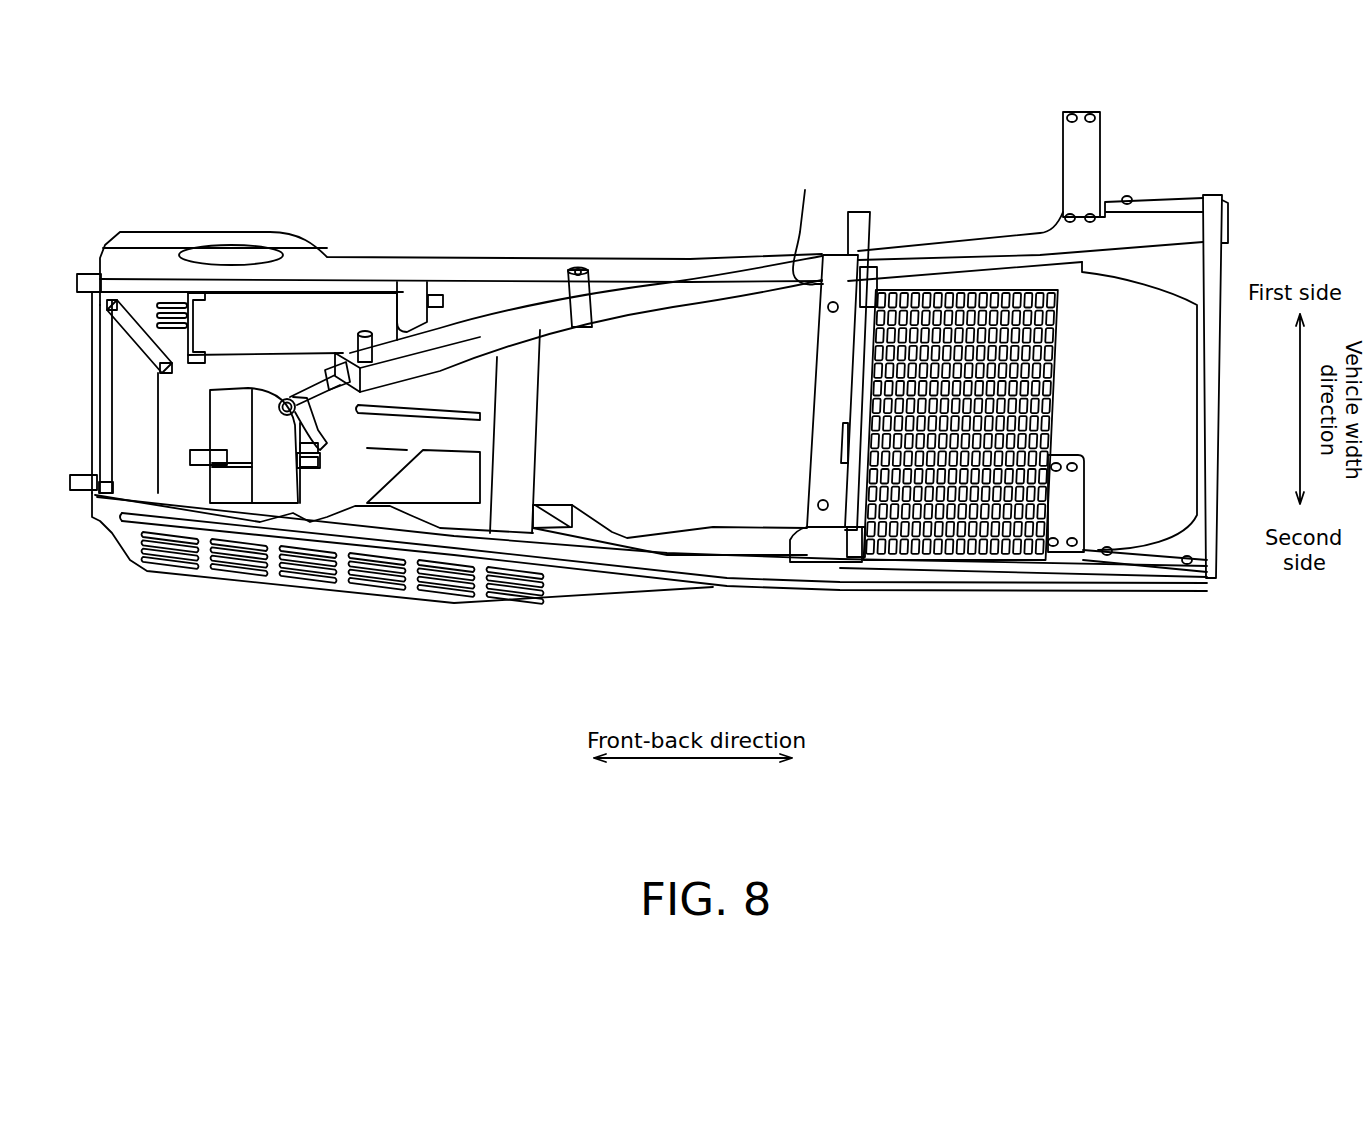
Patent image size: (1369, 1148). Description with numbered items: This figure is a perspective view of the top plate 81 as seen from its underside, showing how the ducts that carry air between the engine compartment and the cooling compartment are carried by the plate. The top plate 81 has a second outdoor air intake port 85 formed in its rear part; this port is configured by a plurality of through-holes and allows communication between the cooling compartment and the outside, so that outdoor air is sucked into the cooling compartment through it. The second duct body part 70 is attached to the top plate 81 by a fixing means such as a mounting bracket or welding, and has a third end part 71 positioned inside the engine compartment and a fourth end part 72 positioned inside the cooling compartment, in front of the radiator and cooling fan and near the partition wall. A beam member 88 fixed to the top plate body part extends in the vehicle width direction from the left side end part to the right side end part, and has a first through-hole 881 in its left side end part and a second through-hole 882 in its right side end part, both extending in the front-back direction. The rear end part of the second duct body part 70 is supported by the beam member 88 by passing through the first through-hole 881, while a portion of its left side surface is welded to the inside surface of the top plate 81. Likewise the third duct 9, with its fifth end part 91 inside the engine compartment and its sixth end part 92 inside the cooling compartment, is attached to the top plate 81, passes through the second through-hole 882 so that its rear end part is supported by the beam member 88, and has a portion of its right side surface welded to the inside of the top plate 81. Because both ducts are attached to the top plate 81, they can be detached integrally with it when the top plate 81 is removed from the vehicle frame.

The third duct 9 is at (723, 542).
The second duct body part 70 is at (471, 332).
The third end part 71 is at (348, 345).
The fourth end part 72 is at (866, 270).
The top plate 81 is at (680, 226).
The second outdoor air intake port 85 is at (973, 345).
The beam member 88 is at (826, 364).
The first through-hole 881 is at (798, 250).
The second through-hole 882 is at (805, 537).
The fifth end part 91 is at (586, 540).
The sixth end part 92 is at (862, 537).